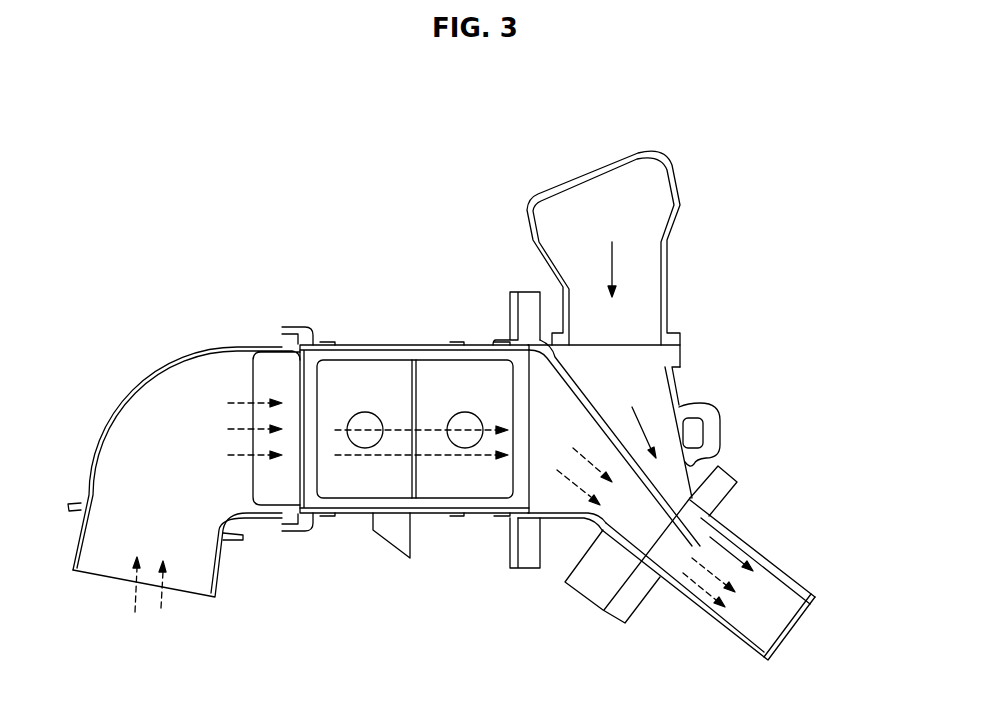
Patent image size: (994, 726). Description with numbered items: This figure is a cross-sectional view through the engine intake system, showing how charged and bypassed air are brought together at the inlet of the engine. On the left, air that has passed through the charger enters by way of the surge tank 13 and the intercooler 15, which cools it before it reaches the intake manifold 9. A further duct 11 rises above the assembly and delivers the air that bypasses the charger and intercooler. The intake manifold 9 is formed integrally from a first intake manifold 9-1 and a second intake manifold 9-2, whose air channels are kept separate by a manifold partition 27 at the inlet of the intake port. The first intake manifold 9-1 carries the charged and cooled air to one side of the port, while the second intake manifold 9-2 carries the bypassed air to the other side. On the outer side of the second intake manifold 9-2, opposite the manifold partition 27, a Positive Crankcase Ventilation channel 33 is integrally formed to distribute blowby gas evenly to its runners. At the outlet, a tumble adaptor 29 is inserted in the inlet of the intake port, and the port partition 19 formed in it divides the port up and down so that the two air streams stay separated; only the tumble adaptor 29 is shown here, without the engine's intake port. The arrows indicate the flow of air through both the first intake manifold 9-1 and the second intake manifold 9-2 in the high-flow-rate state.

The surge tank 13 is at (165, 417).
The intercooler 15 is at (375, 378).
The upper intake duct 11 is at (667, 250).
The manifold partition 27 is at (593, 408).
The Positive Crankcase Ventilation (PCV) channel 33 is at (694, 431).
The intake manifold 9 is at (737, 534).
The first intake manifold 9-1 is at (628, 526).
The second intake manifold 9-2 is at (662, 479).
The tumble adaptor 29 is at (787, 576).
The port partition 19 is at (770, 602).